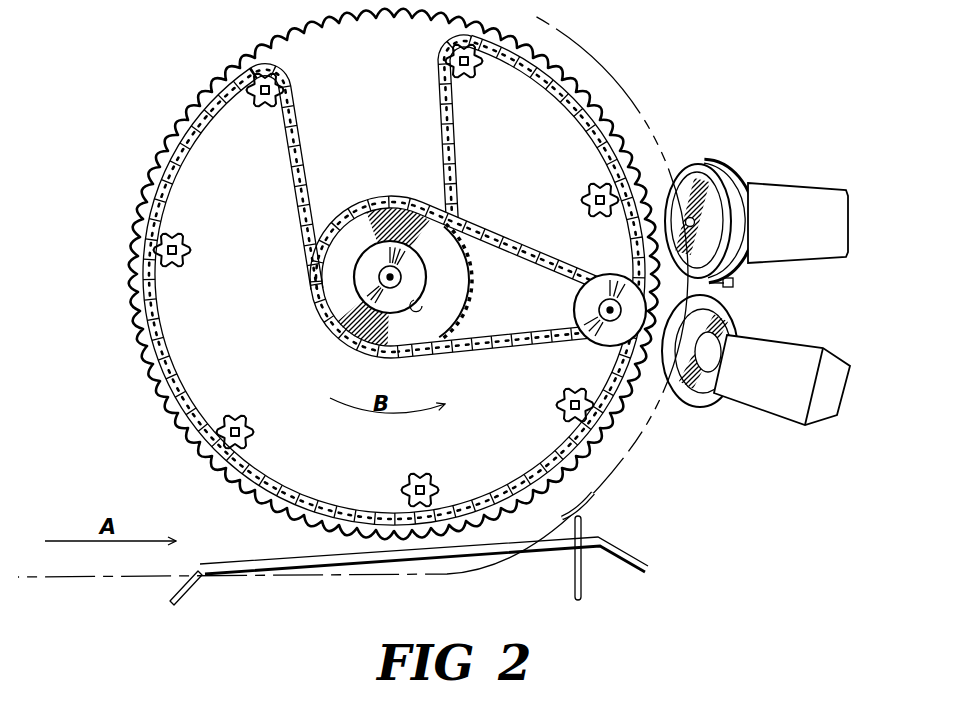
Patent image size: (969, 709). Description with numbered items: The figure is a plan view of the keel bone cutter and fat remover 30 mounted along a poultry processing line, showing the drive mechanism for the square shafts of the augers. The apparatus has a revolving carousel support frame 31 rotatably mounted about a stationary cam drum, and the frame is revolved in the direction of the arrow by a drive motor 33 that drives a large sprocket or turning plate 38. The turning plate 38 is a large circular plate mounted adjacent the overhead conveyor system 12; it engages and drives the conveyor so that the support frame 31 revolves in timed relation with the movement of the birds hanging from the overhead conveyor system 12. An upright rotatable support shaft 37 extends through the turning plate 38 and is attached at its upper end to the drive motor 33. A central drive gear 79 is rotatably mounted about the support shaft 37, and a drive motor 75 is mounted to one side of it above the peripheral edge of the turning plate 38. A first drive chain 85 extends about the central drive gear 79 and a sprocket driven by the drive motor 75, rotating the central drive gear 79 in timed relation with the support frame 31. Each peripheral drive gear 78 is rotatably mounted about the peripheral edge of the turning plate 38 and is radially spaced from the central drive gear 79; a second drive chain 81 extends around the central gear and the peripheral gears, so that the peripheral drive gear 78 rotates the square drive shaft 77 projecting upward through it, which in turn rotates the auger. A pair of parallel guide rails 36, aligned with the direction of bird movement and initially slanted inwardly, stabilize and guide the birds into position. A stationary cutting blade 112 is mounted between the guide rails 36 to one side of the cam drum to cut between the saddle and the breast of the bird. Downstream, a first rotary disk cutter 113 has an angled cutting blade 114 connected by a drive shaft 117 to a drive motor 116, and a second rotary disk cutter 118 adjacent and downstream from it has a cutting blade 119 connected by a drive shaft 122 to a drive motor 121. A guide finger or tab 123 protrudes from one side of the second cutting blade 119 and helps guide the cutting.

The overhead conveyor system 12 is at (44, 578).
The keel bone cutter and fat remover apparatus 30 is at (700, 86).
The revolving carousel support frame 31 is at (170, 431).
The drive motor 33 is at (362, 279).
The guide rails 36 is at (190, 591).
The support shaft 37 is at (370, 263).
The turning plate 38 is at (216, 339).
The drive motor 75 is at (592, 301).
The square drive shaft 77 is at (257, 431).
The peripheral drive gear 78 is at (266, 110).
The central drive gear 79 is at (460, 289).
The second drive chain 81 is at (299, 196).
The first drive chain 85 is at (540, 252).
The stationary cutting blade 112 is at (592, 510).
The first rotary disk cutter 113 is at (736, 456).
The cutting blade 114 is at (673, 396).
The drive motor 116 is at (788, 385).
The drive shaft 117 is at (735, 334).
The second rotary disk cutter 118 is at (800, 176).
The cutting blade 119 is at (686, 190).
The drive motor 121 is at (777, 232).
The drive shaft 122 is at (710, 178).
The guide finger or tab 123 is at (736, 285).